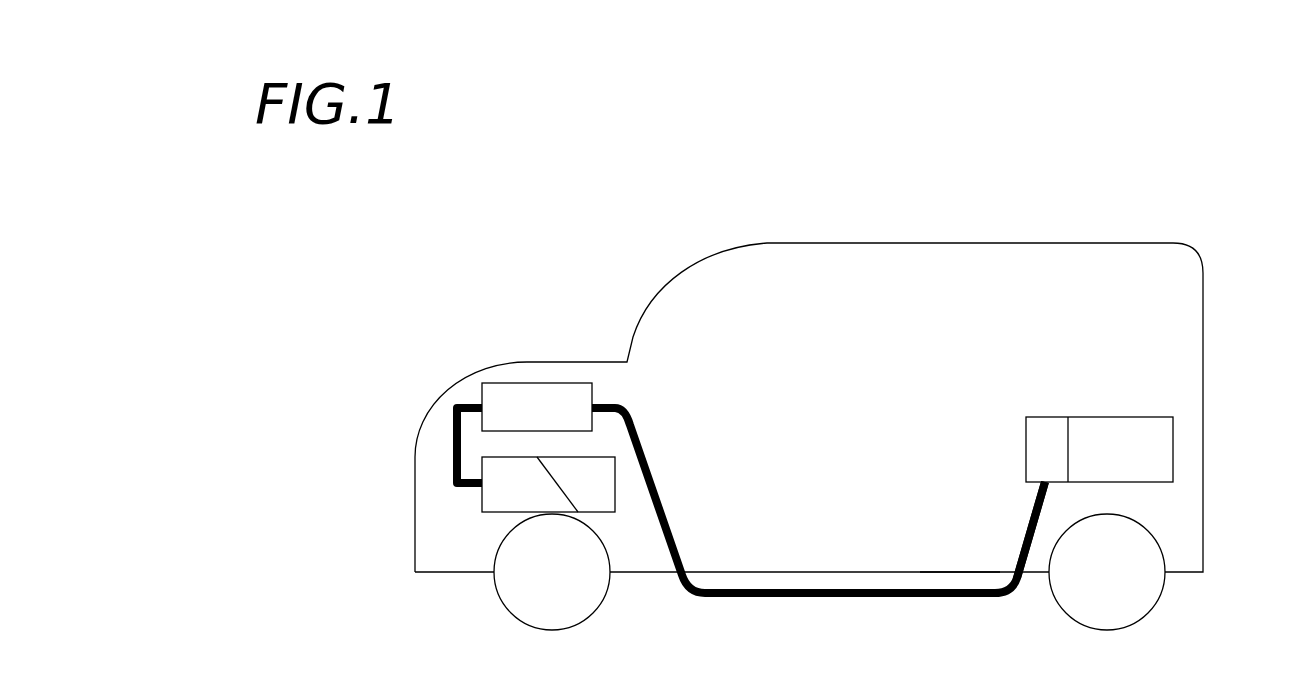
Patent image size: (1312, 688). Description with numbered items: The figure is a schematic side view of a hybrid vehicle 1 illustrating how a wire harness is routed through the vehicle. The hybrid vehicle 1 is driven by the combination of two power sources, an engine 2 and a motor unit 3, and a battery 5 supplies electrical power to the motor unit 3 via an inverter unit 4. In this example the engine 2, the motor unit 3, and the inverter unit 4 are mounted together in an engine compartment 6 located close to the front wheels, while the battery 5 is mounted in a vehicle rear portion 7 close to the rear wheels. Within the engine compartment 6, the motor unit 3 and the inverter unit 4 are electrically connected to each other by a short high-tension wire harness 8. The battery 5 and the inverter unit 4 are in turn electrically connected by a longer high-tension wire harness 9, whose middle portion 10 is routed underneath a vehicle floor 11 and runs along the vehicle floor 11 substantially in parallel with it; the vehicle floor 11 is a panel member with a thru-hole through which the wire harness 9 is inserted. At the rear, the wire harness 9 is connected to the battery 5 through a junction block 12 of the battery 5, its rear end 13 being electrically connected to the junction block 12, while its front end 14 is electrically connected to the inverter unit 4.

The hybrid vehicle 1 is at (551, 267).
The engine 2 is at (598, 492).
The motor unit 3 is at (497, 497).
The inverter unit 4 is at (510, 397).
The battery 5 is at (1125, 430).
The engine compartment 6 is at (435, 540).
The vehicle rear portion 7 is at (1180, 508).
The high-tension wire harness 8 is at (453, 436).
The high-tension wire harness 9 is at (751, 599).
The middle portion 10 is at (863, 598).
The vehicle floor 11 is at (952, 575).
The junction block 12 is at (1037, 430).
The rear end 13 is at (1033, 503).
The front end 14 is at (622, 407).